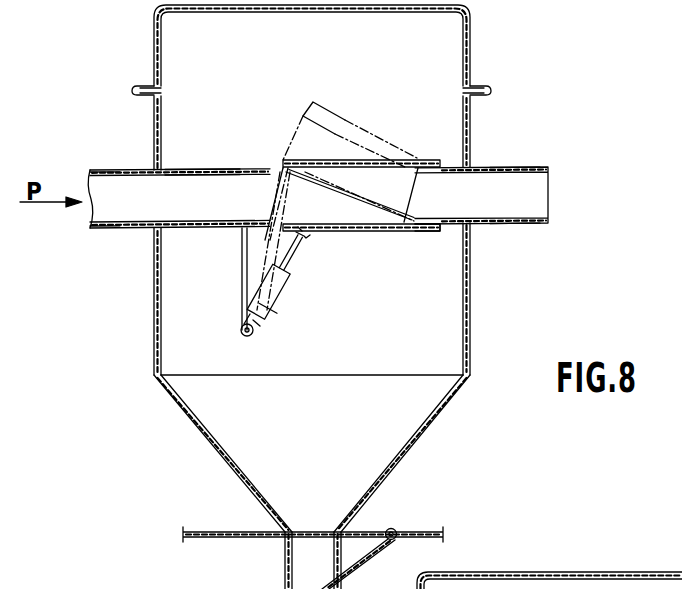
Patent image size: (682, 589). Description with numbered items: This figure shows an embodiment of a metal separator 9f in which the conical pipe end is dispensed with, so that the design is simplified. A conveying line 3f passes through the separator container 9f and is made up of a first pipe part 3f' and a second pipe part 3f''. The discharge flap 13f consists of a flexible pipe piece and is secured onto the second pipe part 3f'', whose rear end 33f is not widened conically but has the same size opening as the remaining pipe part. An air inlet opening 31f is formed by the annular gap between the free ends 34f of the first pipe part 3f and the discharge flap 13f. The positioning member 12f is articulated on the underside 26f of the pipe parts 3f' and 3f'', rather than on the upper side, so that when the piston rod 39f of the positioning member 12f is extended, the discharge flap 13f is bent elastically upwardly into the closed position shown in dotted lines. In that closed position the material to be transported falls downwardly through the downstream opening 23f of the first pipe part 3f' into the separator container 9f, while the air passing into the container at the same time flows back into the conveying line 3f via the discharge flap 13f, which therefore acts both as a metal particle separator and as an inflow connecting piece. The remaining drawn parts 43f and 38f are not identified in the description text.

The metal separator 9f is at (487, 48).
The conveying line 3f is at (163, 170).
The first pipe part 3f' is at (104, 238).
The second pipe part 3f'' is at (494, 171).
The pipe section inside vessel 43f is at (195, 170).
The downstream opening 23f is at (240, 228).
The underside 26f is at (515, 226).
The discharge flap 13f is at (338, 233).
The rear end 33f is at (434, 233).
The free end 34f is at (250, 169).
The slot / open flap position 38f is at (290, 158).
The air inlet opening 31f is at (273, 166).
The positioning member 12f is at (268, 320).
The piston rod 39f is at (292, 236).